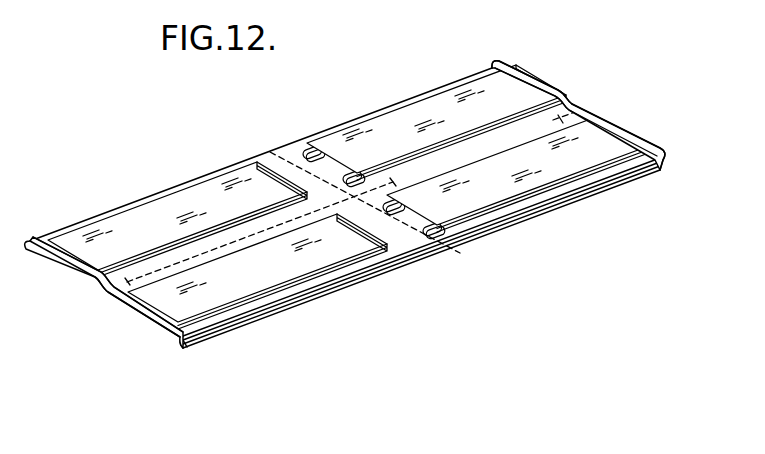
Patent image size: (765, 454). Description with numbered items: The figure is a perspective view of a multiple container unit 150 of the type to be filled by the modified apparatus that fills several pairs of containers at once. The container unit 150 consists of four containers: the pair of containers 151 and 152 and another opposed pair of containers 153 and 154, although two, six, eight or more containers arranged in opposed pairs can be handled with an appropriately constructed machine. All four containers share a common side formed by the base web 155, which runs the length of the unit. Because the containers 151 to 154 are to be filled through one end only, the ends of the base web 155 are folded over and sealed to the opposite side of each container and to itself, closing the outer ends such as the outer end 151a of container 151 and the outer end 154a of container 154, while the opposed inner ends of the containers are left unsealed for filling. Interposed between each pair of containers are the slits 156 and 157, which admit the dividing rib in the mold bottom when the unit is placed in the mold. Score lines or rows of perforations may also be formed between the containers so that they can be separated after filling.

The container unit 150 is at (358, 113).
The container 151 is at (278, 278).
The outer end of container 151a is at (191, 341).
The container 152 is at (497, 192).
The container 153 is at (148, 210).
The container 154 is at (434, 104).
The outer end of container 154a is at (636, 132).
The base web 155 is at (577, 193).
The slit 156 is at (150, 277).
The slit 157 is at (537, 125).